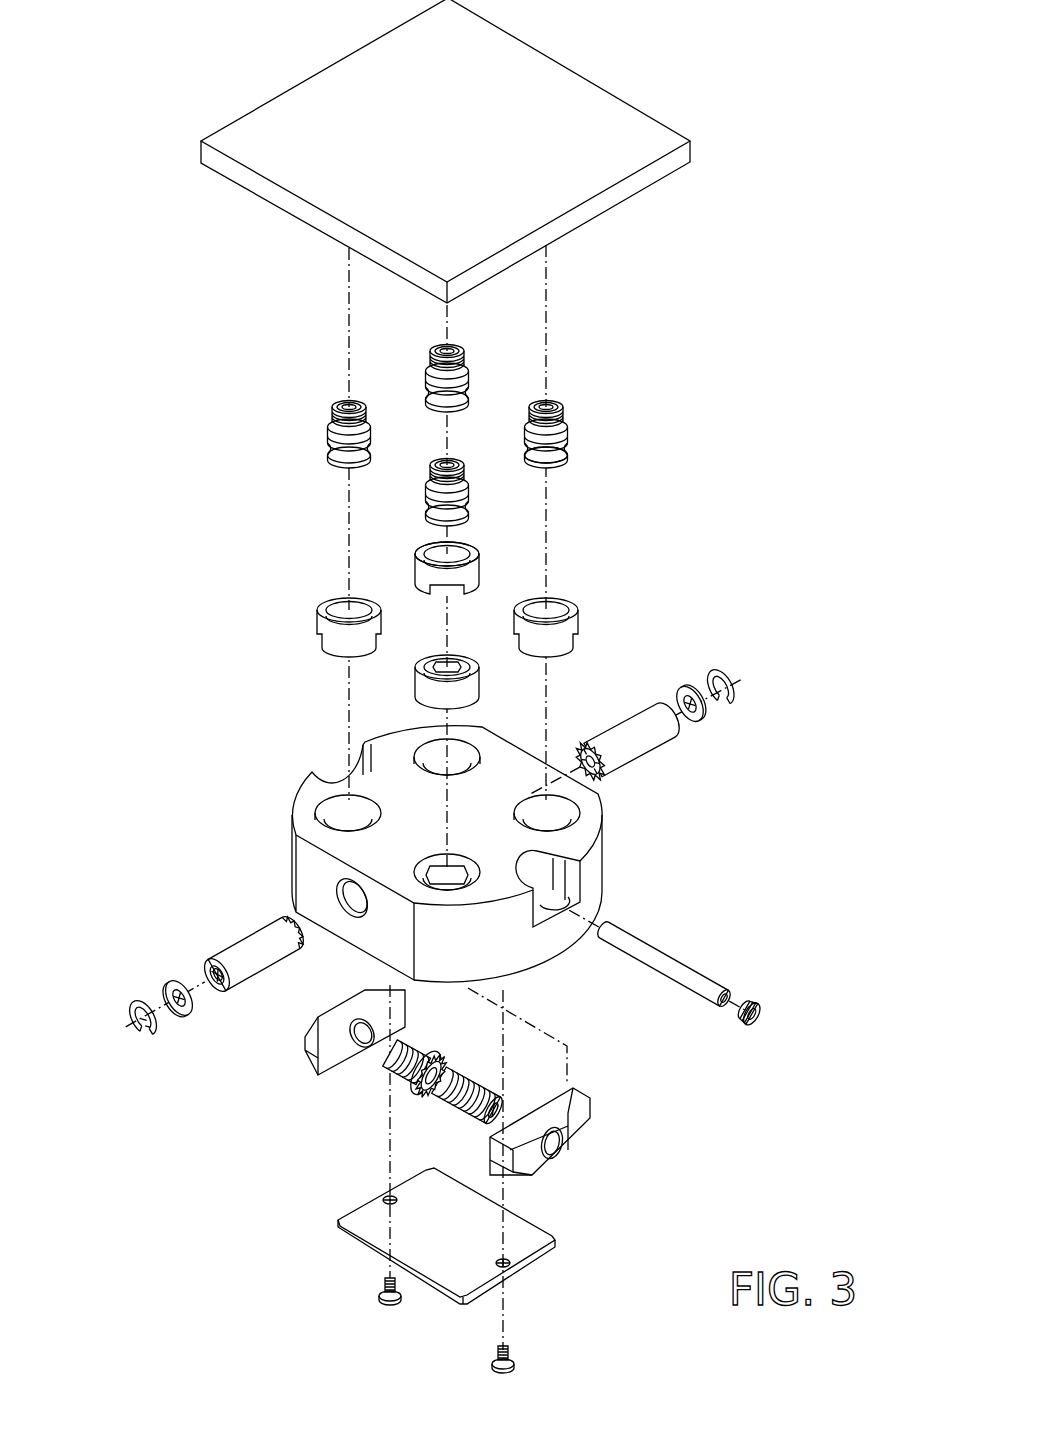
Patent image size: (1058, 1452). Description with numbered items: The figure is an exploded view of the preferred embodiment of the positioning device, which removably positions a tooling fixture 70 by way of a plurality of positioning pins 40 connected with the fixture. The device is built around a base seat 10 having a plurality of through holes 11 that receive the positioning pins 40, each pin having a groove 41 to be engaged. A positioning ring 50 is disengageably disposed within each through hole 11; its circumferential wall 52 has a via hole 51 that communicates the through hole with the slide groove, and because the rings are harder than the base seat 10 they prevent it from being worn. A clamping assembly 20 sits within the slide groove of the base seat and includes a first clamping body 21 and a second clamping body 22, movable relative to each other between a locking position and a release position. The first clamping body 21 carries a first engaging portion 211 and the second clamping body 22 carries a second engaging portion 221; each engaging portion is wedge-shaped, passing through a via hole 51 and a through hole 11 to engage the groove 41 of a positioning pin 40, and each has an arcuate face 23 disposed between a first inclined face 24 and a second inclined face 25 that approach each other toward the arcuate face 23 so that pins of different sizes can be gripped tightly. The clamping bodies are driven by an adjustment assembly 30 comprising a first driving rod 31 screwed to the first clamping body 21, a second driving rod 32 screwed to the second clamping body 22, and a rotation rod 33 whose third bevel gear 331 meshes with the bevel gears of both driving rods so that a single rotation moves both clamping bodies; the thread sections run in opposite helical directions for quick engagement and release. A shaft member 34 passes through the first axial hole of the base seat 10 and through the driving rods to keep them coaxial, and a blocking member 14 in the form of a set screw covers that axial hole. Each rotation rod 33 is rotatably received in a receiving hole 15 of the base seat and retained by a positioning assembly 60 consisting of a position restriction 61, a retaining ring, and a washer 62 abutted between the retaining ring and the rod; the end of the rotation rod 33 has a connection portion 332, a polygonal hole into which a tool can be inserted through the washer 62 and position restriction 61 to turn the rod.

The base seat 10 is at (468, 854).
The through holes 11 is at (335, 812).
The blocking member 14 is at (749, 1012).
The receiving hole 15 is at (337, 888).
The clamping assembly 20 is at (513, 1109).
The first clamping body 21 is at (609, 1156).
The first engaging portion 211 is at (609, 1183).
The second clamping body 22 is at (301, 1101).
The second engaging portion 221 is at (305, 1065).
The arcuate face 23 is at (515, 1165).
The first inclined face 24 is at (513, 1151).
The second inclined face 25 is at (517, 1173).
The adjustment assembly 30 is at (400, 1091).
The first driving rod 31 is at (444, 1083).
The second driving rod 32 is at (415, 1077).
The rotation rod 33 is at (417, 839).
The third bevel gear 331 is at (590, 761).
The connection portion 332 is at (208, 972).
The shaft member 34 is at (696, 964).
The positioning pins 40 is at (567, 423).
The groove 41 is at (560, 460).
The positioning rings 50 is at (537, 557).
The via hole 51 is at (455, 594).
The circumferential wall 52 is at (476, 573).
The positioning assembly 60 is at (168, 1072).
The position restriction 61 is at (147, 1038).
The washer 62 is at (181, 1016).
The tooling fixture 70 is at (650, 127).